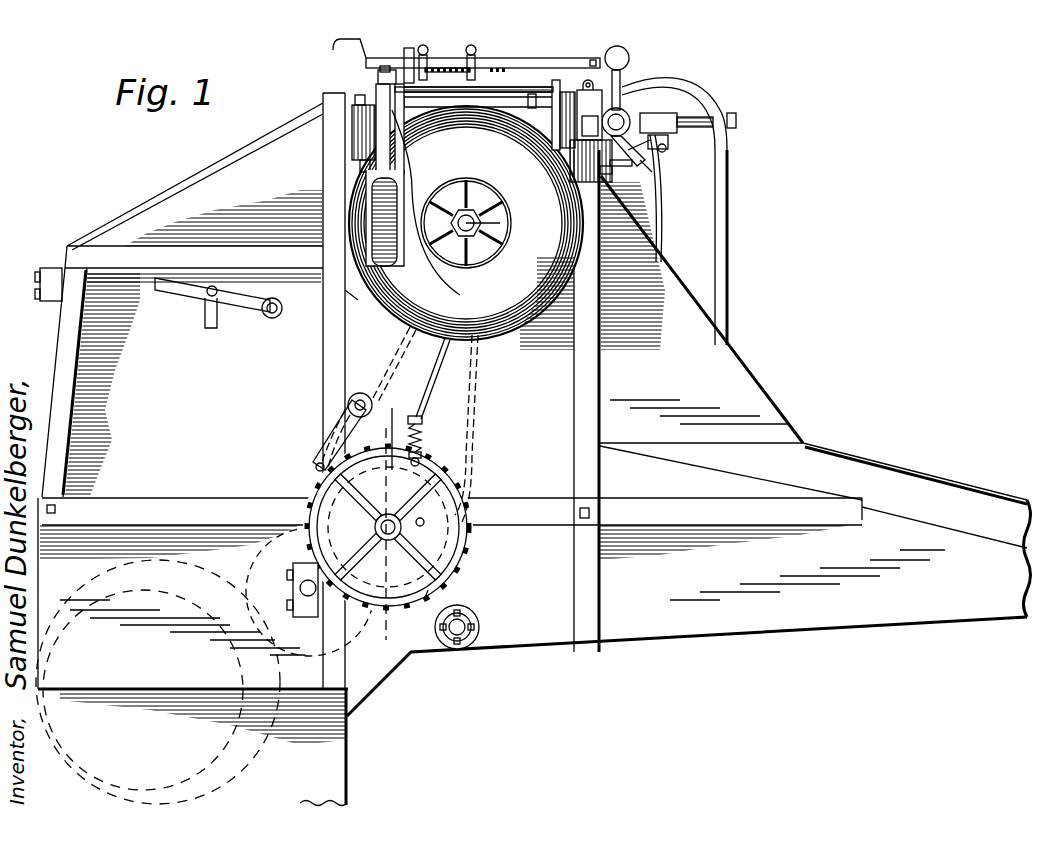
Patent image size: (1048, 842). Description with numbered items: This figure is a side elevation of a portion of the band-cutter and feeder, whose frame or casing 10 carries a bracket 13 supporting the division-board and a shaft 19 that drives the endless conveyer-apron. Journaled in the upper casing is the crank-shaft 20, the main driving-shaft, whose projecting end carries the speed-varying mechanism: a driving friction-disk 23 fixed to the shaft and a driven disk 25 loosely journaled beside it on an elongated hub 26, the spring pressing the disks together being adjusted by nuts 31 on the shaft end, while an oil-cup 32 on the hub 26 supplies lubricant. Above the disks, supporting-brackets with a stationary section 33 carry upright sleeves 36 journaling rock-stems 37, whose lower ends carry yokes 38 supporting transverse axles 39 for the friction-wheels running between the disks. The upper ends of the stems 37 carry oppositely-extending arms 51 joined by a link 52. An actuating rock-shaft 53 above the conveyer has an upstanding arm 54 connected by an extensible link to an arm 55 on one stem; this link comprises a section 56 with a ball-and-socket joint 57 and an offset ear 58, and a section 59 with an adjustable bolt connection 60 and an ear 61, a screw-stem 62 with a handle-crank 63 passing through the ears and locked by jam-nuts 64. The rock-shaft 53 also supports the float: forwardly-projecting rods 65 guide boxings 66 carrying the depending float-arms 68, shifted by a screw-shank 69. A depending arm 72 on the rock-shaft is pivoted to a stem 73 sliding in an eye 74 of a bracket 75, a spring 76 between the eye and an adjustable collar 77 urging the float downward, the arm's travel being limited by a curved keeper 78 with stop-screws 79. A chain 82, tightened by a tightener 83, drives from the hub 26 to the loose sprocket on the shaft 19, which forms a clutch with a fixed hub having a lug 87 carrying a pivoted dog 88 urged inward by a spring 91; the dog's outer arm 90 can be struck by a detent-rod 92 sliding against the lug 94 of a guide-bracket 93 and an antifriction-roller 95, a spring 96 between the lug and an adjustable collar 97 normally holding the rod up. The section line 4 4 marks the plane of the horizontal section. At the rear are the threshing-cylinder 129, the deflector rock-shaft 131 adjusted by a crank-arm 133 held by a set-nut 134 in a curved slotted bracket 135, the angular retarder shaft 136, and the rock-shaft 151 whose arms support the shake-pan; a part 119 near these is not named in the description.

The section line 4 is at (660, 227).
The frame or casing 10 is at (205, 444).
The bracket 13 is at (728, 226).
The conveyer shaft 19 is at (325, 553).
The crank-shaft 20 is at (486, 230).
The friction-disk 23 is at (405, 268).
The driven disk 25 is at (466, 223).
The elongated hub 26 is at (486, 190).
The nuts 31 is at (462, 240).
The oil-cup 32 is at (466, 223).
The stationary section 33 is at (345, 126).
The upright sleeves 36 is at (413, 146).
The rock-stems 37 is at (560, 78).
The yokes 38 is at (366, 212).
The transverse axles 39 is at (372, 232).
The oppositely-extending arms 51 is at (323, 101).
The link 52 is at (512, 87).
The actuating rock-shaft 53 is at (645, 113).
The upstanding arm 54 is at (640, 90).
The arm 55 is at (380, 72).
The link section 56 is at (548, 58).
The ball-and-socket joint 57 is at (626, 52).
The offset ear 58 is at (476, 60).
The link section 59 is at (402, 95).
The bolt connection 60 is at (387, 70).
The offset ear 61 is at (410, 48).
The screw-stem 62 is at (442, 74).
The handle-crank 63 is at (333, 47).
The jam-nuts 64 is at (428, 52).
The rods 65 is at (737, 121).
The boxings 66 is at (692, 116).
The float-arms 68 is at (663, 234).
The screw-shank 69 is at (425, 522).
The depending arm 72 is at (650, 172).
The stem 73 is at (640, 186).
The eye 74 is at (560, 214).
The bracket 75 is at (592, 182).
The spring 76 is at (630, 190).
The adjustable collar 77 is at (616, 168).
The curved keeper 78 is at (655, 160).
The stop-screws 79 is at (685, 154).
The chain 82 is at (480, 413).
The tightener 83 is at (348, 410).
The outstanding lug 87 is at (330, 492).
The dog 88 is at (318, 465).
The arm 90 is at (420, 462).
The spring 91 is at (428, 592).
The detent-rod 92 is at (432, 382).
The guide-bracket 93 is at (340, 442).
The lug 94 is at (422, 454).
The antifriction-roller 95 is at (393, 430).
The spring 96 is at (422, 434).
The adjustable collar 97 is at (423, 420).
The block 119 is at (50, 300).
The threshing-cylinder 129 is at (153, 592).
The rock-shaft 131 is at (274, 320).
The crank-arm 133 is at (185, 295).
The set screw or nut 134 is at (215, 285).
The curved slotted bracket 135 is at (222, 322).
The angular shaft 136 is at (293, 598).
The rock-shaft 151 is at (480, 629).